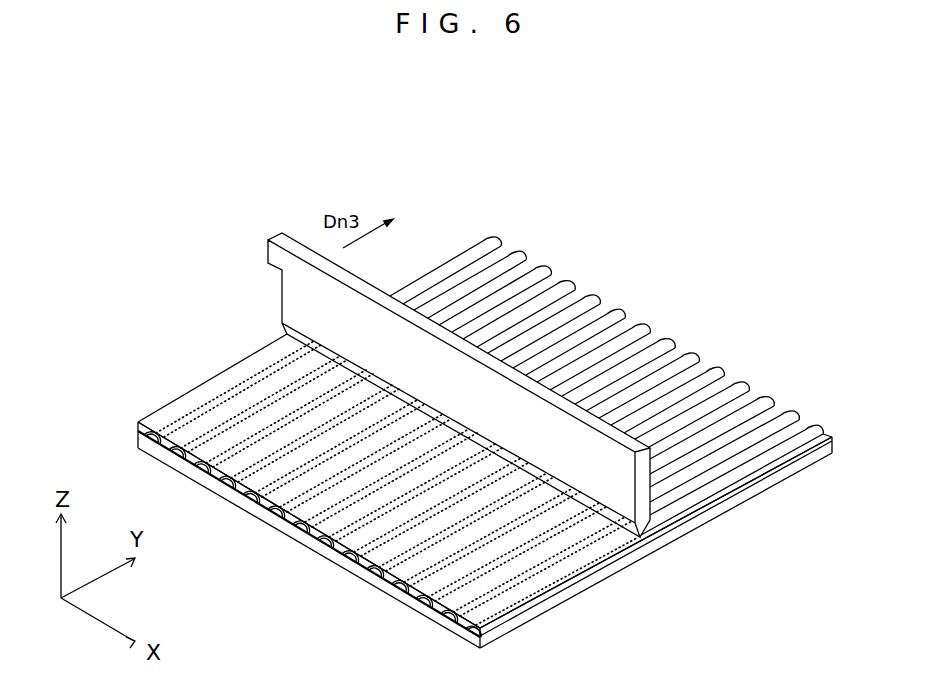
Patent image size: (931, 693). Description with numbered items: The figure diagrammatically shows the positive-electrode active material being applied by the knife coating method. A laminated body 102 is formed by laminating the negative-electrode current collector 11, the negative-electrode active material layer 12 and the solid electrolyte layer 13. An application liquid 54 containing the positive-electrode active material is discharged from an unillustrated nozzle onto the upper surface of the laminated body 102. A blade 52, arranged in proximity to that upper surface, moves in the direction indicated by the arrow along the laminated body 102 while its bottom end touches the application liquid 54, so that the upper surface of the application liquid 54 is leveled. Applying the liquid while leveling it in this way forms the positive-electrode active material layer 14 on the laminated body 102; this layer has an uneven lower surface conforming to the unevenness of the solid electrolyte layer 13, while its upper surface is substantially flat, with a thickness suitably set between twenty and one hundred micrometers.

The negative-electrode current collector 11 is at (730, 505).
The negative-electrode active material layer 12 is at (338, 549).
The solid electrolyte layer 13 is at (668, 322).
The positive-electrode active material layer 14 is at (485, 534).
The blade 52 is at (297, 299).
The application liquid 54 is at (240, 368).
The laminated body 102 is at (609, 253).